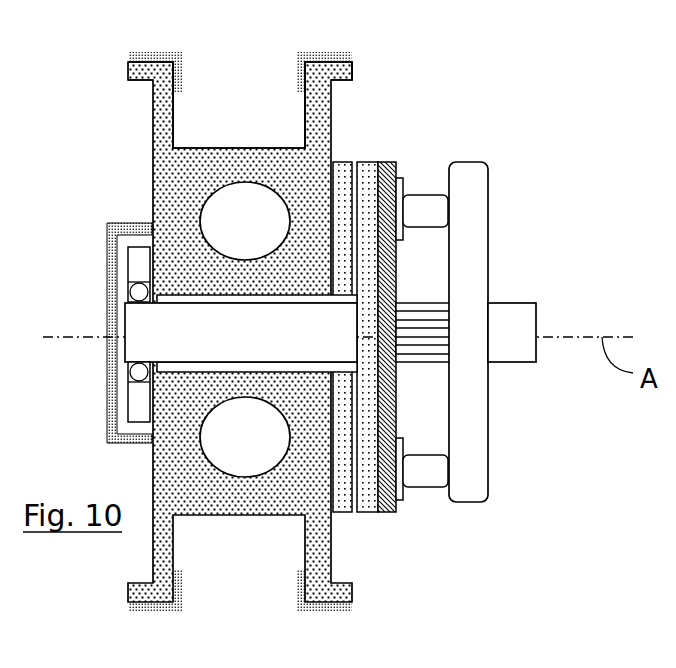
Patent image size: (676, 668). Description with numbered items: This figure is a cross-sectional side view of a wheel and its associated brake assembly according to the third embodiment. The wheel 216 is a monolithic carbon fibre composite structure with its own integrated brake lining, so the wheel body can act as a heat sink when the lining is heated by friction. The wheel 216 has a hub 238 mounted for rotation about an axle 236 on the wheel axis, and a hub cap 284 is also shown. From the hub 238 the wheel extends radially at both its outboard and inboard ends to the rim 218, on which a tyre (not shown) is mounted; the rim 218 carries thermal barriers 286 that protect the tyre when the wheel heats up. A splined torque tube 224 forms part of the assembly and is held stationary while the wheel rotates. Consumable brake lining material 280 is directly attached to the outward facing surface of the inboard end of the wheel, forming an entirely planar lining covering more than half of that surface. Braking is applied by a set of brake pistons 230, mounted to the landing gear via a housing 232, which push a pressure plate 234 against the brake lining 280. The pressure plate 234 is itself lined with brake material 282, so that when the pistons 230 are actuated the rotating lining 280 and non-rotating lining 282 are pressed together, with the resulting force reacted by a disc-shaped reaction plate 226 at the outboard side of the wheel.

The wheel 216 is at (238, 493).
The rim 218 is at (318, 82).
The splined torque tube 224 is at (425, 318).
The reaction plate 226 is at (140, 263).
The brake pistons 230 is at (428, 212).
The housing 232 is at (478, 472).
The pressure plate 234 is at (388, 513).
The axle 236 is at (523, 327).
The hub 238 is at (167, 383).
The brake lining material 280 is at (347, 498).
The brake material 282 is at (367, 173).
The hub cap 284 is at (128, 442).
The thermal barriers 286 is at (328, 55).